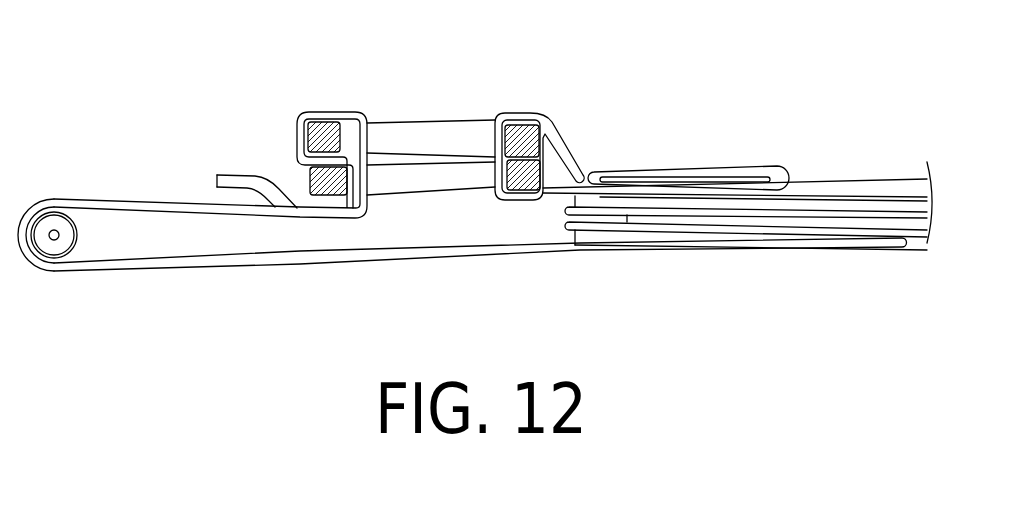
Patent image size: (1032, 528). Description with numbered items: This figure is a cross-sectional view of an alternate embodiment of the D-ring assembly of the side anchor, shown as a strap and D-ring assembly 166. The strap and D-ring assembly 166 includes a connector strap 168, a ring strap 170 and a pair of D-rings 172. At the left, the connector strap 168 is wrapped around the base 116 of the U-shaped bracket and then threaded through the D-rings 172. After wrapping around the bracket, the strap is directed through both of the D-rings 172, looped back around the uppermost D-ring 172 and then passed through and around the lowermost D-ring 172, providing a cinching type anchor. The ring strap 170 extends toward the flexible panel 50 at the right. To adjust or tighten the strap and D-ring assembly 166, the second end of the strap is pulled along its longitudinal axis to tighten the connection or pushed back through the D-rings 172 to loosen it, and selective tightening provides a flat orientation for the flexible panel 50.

The flexible panel 50 is at (868, 181).
The base 116 is at (49, 249).
The strap and D-ring assembly 166 is at (493, 82).
The connector strap 168 is at (305, 263).
The ring strap 170 is at (720, 167).
The D-rings 172 is at (412, 133).